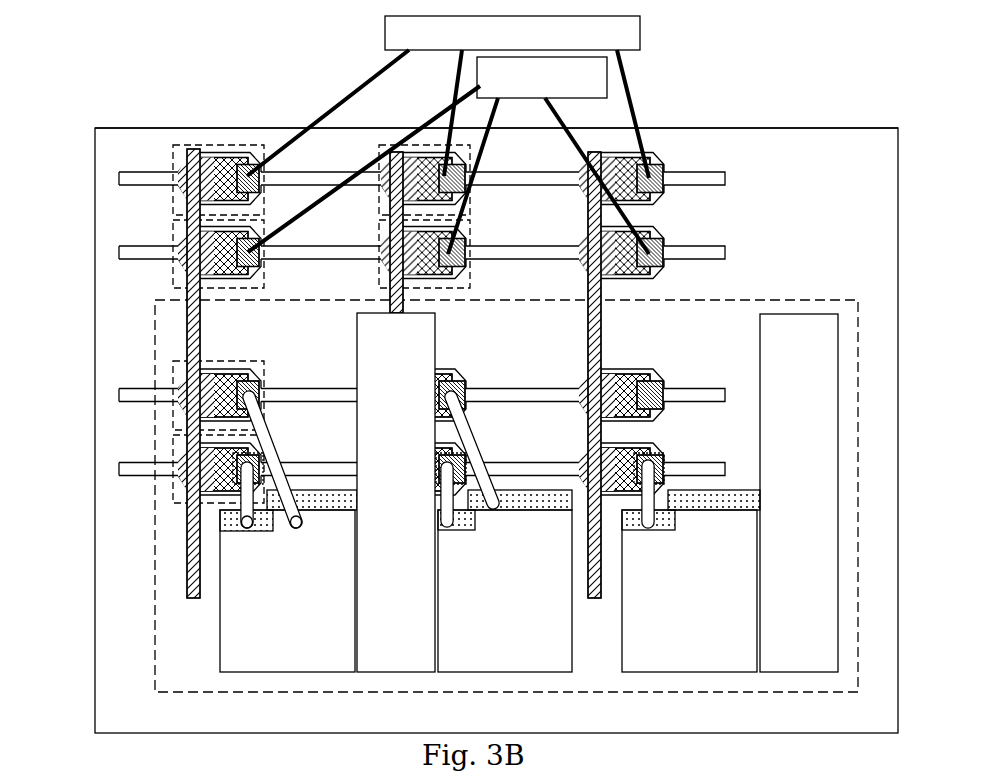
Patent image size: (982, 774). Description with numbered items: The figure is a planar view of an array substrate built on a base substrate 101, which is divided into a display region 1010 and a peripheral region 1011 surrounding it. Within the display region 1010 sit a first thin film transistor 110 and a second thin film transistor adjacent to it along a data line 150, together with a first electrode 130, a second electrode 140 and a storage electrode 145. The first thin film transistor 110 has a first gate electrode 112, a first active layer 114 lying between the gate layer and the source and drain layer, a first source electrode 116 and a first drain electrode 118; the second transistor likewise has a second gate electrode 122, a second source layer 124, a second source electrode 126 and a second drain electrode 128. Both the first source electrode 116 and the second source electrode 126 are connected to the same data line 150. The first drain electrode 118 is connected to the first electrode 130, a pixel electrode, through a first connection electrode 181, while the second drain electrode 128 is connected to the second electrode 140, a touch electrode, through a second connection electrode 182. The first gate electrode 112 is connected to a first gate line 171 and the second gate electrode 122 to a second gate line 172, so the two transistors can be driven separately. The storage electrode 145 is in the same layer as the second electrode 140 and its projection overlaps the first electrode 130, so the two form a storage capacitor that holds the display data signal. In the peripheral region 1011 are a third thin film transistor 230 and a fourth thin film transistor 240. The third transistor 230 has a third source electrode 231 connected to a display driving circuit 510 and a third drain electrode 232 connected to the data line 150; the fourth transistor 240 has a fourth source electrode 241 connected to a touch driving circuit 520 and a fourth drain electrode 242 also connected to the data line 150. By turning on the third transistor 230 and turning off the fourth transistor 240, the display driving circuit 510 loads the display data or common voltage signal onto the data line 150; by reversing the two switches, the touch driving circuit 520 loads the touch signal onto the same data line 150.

The base substrate 101 is at (496, 418).
The display region 1010 is at (518, 470).
The peripheral region 1011 is at (496, 128).
The first thin film transistor 110 is at (237, 369).
The first gate electrode 112 is at (277, 376).
The first active layer 114 is at (251, 371).
The first source electrode 116 is at (207, 398).
The first drain electrode 118 is at (287, 445).
The second gate electrode 122 is at (279, 446).
The second source layer 124 is at (217, 487).
The second source electrode 126 is at (183, 487).
The second drain electrode 128 is at (286, 474).
The first electrode 130 is at (289, 487).
The second electrode 140 is at (295, 611).
The storage electrode 145 is at (396, 512).
The data line 150 is at (193, 338).
The first gate line 171 is at (709, 377).
The second gate line 172 is at (713, 452).
The first connection electrode 181 is at (243, 520).
The second connection electrode 182 is at (292, 523).
The third thin film transistor 230 is at (218, 159).
The third source electrode 231 is at (265, 145).
The third drain electrode 232 is at (172, 168).
The fourth thin film transistor 240 is at (172, 275).
The fourth source electrode 241 is at (297, 201).
The fourth drain electrode 242 is at (172, 237).
The display driving circuit 510 is at (448, 97).
The touch driving circuit 520 is at (448, 155).